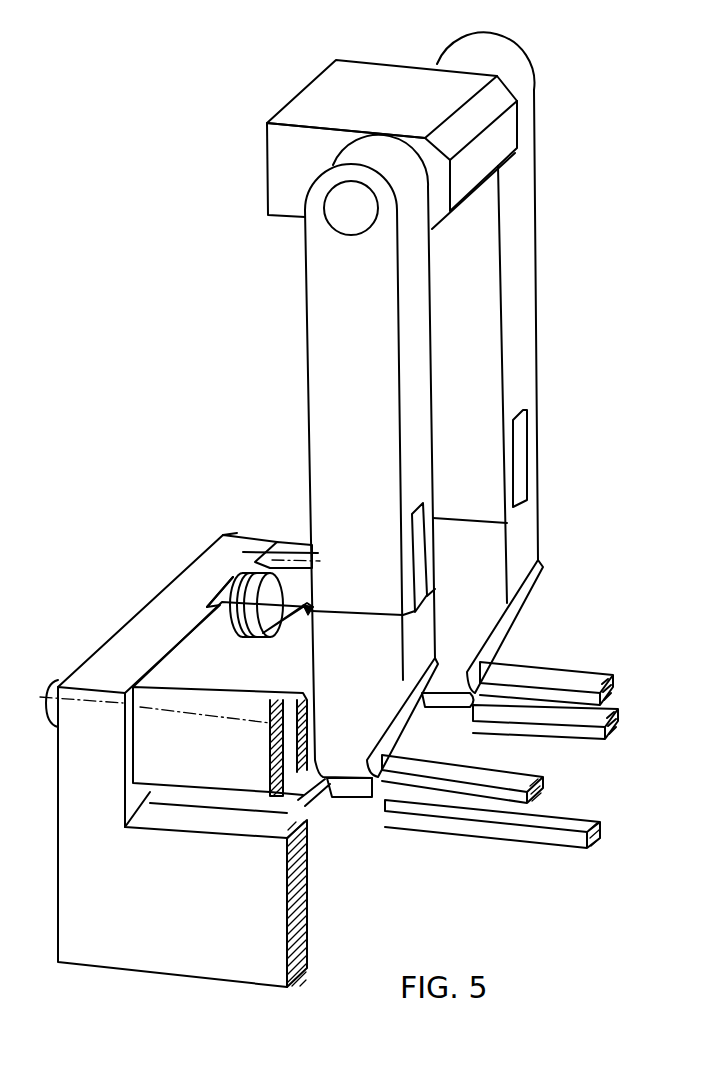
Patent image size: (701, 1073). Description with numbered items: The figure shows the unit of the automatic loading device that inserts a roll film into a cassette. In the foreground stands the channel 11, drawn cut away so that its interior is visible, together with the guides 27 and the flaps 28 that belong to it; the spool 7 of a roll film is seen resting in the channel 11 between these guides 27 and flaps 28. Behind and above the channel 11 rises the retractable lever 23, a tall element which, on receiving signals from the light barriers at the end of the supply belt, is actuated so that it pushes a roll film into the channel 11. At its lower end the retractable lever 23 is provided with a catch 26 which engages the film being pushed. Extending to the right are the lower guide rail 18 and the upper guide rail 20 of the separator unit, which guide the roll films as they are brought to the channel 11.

The channel 11 is at (141, 591).
The spool 7 is at (242, 577).
The guides 27 is at (218, 592).
The flaps 28 is at (298, 552).
The retractable lever 23 is at (315, 357).
The upper guide rail 20 is at (500, 777).
The lower guide rail 18 is at (500, 832).
The catch 26 is at (352, 790).